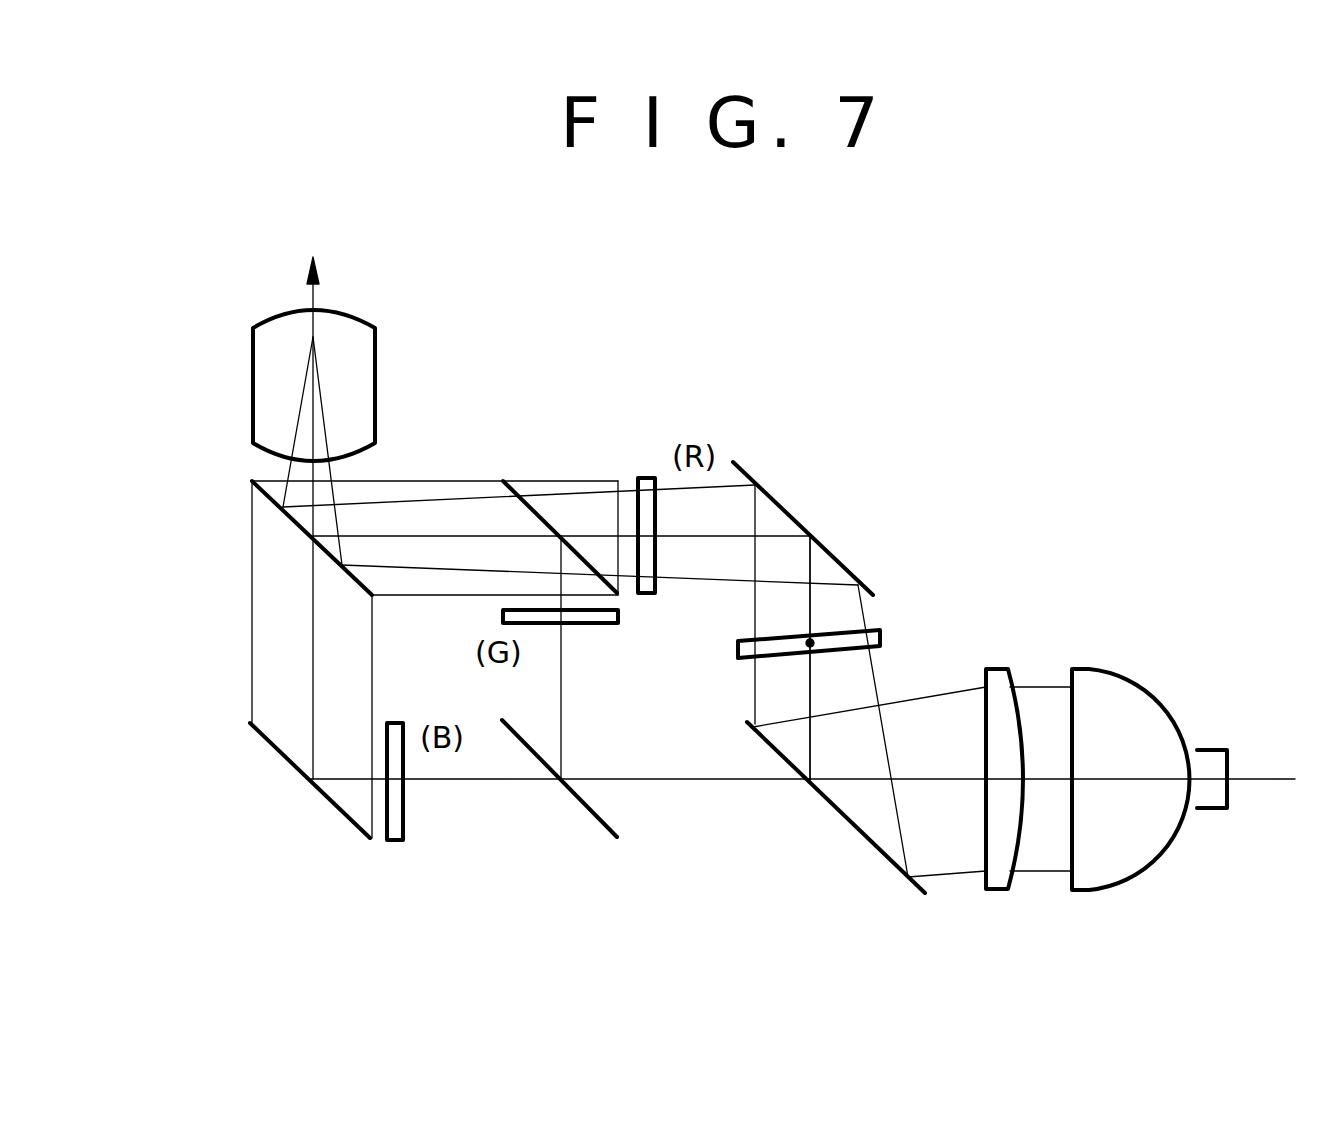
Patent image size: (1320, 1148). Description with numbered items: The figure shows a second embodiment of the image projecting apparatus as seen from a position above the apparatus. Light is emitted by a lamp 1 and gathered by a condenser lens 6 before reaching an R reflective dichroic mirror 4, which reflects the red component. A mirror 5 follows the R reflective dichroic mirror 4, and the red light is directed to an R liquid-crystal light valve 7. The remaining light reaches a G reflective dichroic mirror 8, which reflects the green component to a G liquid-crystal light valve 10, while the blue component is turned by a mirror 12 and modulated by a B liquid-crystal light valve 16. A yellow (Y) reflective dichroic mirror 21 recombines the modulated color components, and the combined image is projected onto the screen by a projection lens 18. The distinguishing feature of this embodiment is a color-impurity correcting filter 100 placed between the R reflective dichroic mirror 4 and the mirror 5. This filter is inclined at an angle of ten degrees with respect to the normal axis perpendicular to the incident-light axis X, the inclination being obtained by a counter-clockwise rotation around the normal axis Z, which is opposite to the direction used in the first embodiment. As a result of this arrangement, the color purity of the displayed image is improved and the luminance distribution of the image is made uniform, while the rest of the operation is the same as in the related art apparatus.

The lamp 1 is at (1140, 893).
The R reflective dichroic mirror 4 is at (865, 838).
The mirror 5 is at (830, 547).
The condenser lens 6 is at (990, 893).
The R liquid-crystal light valve 7 is at (653, 478).
The G reflective dichroic mirror 8 is at (533, 498).
The G liquid-crystal light valve 10 is at (615, 630).
The mirror 12 is at (340, 810).
The B liquid-crystal light valve 16 is at (393, 842).
The projection lens 18 is at (357, 318).
The yellow (Y) reflective dichroic mirror 21 is at (267, 497).
The color-impurity correcting filter 100 is at (878, 630).
The normal axis Z is at (808, 646).
The incident-light axis X is at (812, 688).